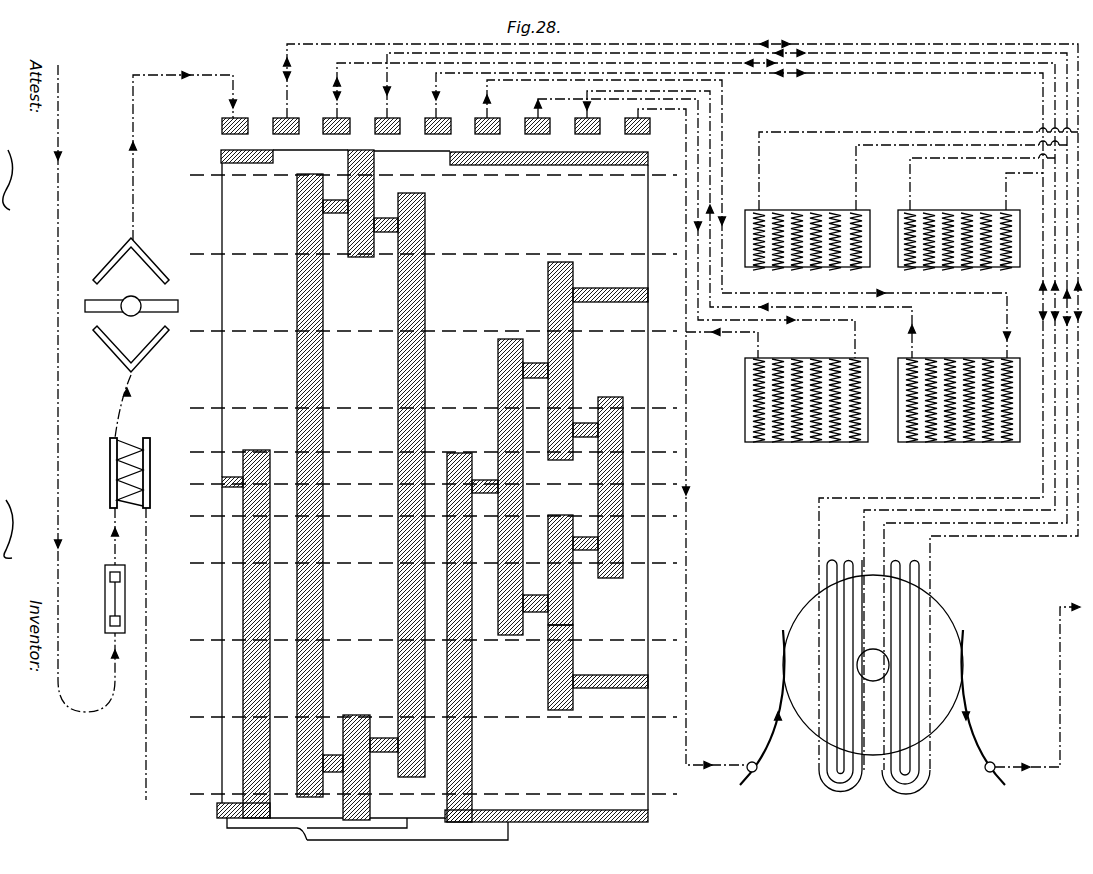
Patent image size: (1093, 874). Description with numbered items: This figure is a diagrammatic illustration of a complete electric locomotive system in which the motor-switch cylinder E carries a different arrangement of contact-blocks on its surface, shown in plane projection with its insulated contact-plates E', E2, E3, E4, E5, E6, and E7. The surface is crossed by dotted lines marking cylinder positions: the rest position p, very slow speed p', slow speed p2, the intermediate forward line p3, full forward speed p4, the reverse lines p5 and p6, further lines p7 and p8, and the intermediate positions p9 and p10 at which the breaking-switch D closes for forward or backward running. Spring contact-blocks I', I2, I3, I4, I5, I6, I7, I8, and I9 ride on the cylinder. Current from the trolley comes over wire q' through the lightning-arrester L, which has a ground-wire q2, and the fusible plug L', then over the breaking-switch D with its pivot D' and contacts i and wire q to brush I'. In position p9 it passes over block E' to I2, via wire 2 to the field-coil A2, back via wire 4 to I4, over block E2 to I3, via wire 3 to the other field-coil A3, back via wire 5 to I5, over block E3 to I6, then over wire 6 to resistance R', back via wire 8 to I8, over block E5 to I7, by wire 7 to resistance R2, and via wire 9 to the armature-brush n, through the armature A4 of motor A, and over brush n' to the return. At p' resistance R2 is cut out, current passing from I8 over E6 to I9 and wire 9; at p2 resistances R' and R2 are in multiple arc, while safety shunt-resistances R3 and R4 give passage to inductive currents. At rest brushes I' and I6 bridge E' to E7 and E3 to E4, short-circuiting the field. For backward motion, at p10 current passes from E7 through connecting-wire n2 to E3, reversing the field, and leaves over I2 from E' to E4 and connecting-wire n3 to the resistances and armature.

The motor-switch cylinder E is at (417, 486).
The contact-plate E' is at (299, 485).
The contact-plate E2 is at (384, 485).
The contact-plate E3 is at (497, 580).
The contact-plate E4 is at (570, 667).
The contact-plate E5 is at (569, 546).
The contact-plate E6 is at (598, 420).
The contact-plate E7 is at (244, 634).
The position of rest p is at (433, 484).
The very slow speed position p' is at (433, 406).
The slow speed position p2 is at (433, 330).
The intermediate forward position p3 is at (433, 252).
The full speed position p4 is at (433, 174).
The reverse position p5 is at (433, 562).
The reverse slow speed position p6 is at (433, 639).
The contact brush line p7 is at (433, 716).
The contact brush line p8 is at (433, 793).
The intermediate position p9 is at (433, 450).
The intermediate position p10 is at (433, 514).
The contact-block I' is at (235, 136).
The contact-block I2 is at (286, 136).
The contact-block I3 is at (336, 136).
The contact-block I4 is at (387, 136).
The contact-block I5 is at (438, 136).
The contact-block I6 is at (487, 136).
The contact-block I7 is at (537, 136).
The contact-block I8 is at (587, 136).
The contact-block I9 is at (637, 136).
The wire 2 is at (686, 406).
The wire 3 is at (698, 415).
The wire 4 is at (729, 410).
The wire 5 is at (740, 419).
The wire 6 is at (747, 216).
The wire 7 is at (696, 224).
The wire 8 is at (750, 224).
The wire 9 is at (698, 439).
The resistance R' is at (959, 386).
The resistance R2 is at (806, 385).
The safety shunt-resistance R3 is at (911, 199).
The safety shunt-resistance R4 is at (976, 212).
The motor A is at (873, 665).
The field-coil A2 is at (906, 663).
The field-coil A3 is at (840, 662).
The armature A4 is at (840, 665).
The armature-brush n is at (762, 707).
The armature-brush n' is at (1020, 695).
The conductor n2 is at (267, 833).
The conductor n3 is at (407, 833).
The wire q is at (183, 156).
The wire q' is at (87, 388).
The ground-wire q2 is at (156, 654).
The circuit-breaker D is at (124, 338).
The switch pivot D' is at (131, 298).
The switch contact i is at (130, 304).
The lightning-arrester L is at (138, 501).
The fusible plug L' is at (104, 599).